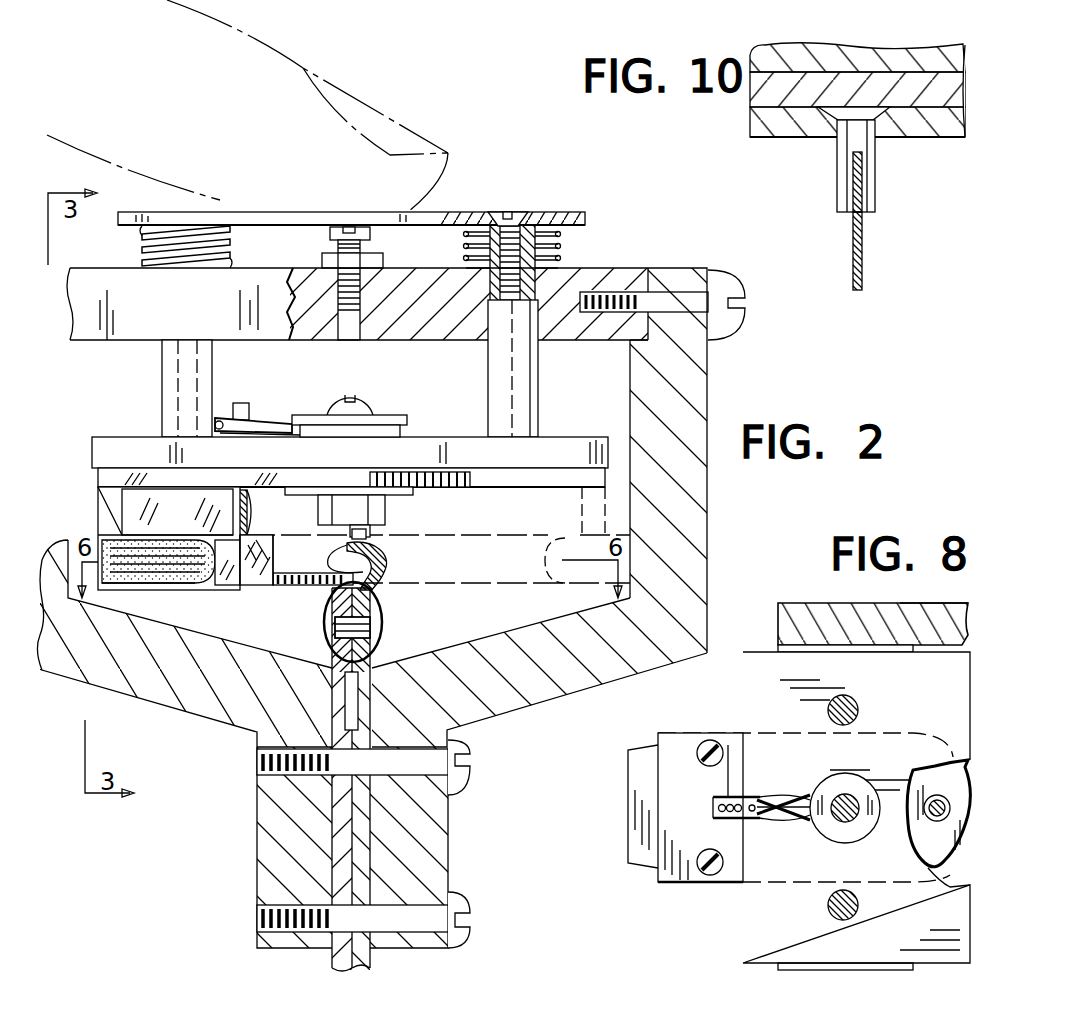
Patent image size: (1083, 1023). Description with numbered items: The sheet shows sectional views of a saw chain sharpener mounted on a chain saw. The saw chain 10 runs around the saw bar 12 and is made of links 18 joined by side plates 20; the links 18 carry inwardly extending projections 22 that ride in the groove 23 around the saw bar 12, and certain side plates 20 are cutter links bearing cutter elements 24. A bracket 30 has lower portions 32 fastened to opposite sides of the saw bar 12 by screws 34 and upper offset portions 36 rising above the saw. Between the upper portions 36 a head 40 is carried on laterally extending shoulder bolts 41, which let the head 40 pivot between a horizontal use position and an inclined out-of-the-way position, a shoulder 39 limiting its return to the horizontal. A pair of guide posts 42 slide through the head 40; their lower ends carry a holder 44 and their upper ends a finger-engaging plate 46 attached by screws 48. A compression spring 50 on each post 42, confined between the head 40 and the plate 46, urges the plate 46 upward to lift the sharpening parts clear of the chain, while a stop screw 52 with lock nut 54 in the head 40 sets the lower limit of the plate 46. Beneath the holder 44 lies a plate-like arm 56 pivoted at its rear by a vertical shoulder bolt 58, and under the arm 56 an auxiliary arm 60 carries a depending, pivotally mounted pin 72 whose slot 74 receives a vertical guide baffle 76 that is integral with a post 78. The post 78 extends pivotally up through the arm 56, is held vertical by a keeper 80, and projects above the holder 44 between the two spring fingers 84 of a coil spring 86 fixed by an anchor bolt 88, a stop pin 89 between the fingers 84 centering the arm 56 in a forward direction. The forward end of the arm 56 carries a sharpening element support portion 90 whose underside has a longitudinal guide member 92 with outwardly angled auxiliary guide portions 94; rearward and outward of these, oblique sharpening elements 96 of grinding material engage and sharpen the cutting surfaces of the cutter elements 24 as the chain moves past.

In FIG. 2, the saw chain 10 is at (380, 598).
In FIG. 2, the saw bar 12 is at (372, 963).
In FIG. 2, the links 18 is at (335, 598).
In FIG. 2, the side plates 20 is at (370, 655).
In FIG. 2, the inwardly extending projections 22 is at (332, 712).
In FIG. 2, the groove 23 is at (332, 690).
In FIG. 2, the cutter elements 24 is at (385, 550).
In FIG. 2, the bracket 30 is at (545, 685).
In FIG. 8, the bracket 30 is at (820, 618).
In FIG. 2, the lower portions 32 is at (430, 842).
In FIG. 8, the lower portions 32 is at (780, 650).
In FIG. 2, the screws 34 is at (455, 892).
In FIG. 2, the upper offset portions 36 is at (690, 378).
In FIG. 8, the upper offset portions 36 is at (885, 616).
In FIG. 2, the shoulder 39 is at (645, 345).
In FIG. 2, the head 40 is at (600, 282).
In FIG. 2, the shoulder bolts 41 is at (727, 287).
In FIG. 2, the guide posts 42 is at (175, 380).
In FIG. 8, the guide posts 42 is at (828, 708).
In FIG. 2, the holder or support plate 44 is at (130, 445).
In FIG. 8, the holder or support plate 44 is at (765, 938).
In FIG. 10, the holder or support plate 44 is at (888, 52).
In FIG. 2, the finger-engaging plate 46 is at (148, 217).
In FIG. 2, the screws 48 is at (518, 212).
In FIG. 2, the compression spring 50 is at (142, 250).
In FIG. 2, the stop screw 52 is at (330, 236).
In FIG. 2, the lock nut 54 is at (383, 258).
In FIG. 2, the plate-like arm 56 is at (100, 478).
In FIG. 8, the plate-like arm 56 is at (670, 885).
In FIG. 10, the plate-like arm 56 is at (762, 92).
In FIG. 2, the vertical shoulder bolt 58 is at (385, 507).
In FIG. 8, the vertical shoulder bolt 58 is at (937, 815).
In FIG. 10, the auxiliary arm 60 is at (795, 127).
In FIG. 2, the pin 72 is at (385, 526).
In FIG. 10, the pin 72 is at (875, 190).
In FIG. 10, the slot 74 is at (862, 167).
In FIG. 2, the vertical guide baffle 76 is at (262, 576).
In FIG. 10, the vertical guide baffle 76 is at (862, 262).
In FIG. 2, the post 78 is at (243, 403).
In FIG. 8, the post 78 is at (730, 798).
In FIG. 2, the keeper 80 is at (230, 420).
In FIG. 8, the keeper 80 is at (713, 808).
In FIG. 2, the spring fingers 84 is at (270, 427).
In FIG. 8, the spring fingers 84 is at (752, 800).
In FIG. 2, the coil spring 86 is at (400, 428).
In FIG. 8, the coil spring 86 is at (807, 820).
In FIG. 2, the anchor bolt 88 is at (360, 405).
In FIG. 8, the anchor bolt 88 is at (853, 822).
In FIG. 8, the stop pin 89 is at (780, 797).
In FIG. 2, the sharpening element support portion 90 is at (100, 505).
In FIG. 8, the sharpening element support portion 90 is at (640, 785).
In FIG. 2, the guide member 92 is at (240, 578).
In FIG. 2, the auxiliary guide portions 94 is at (213, 575).
In FIG. 2, the sharpening elements or stones 96 is at (165, 583).